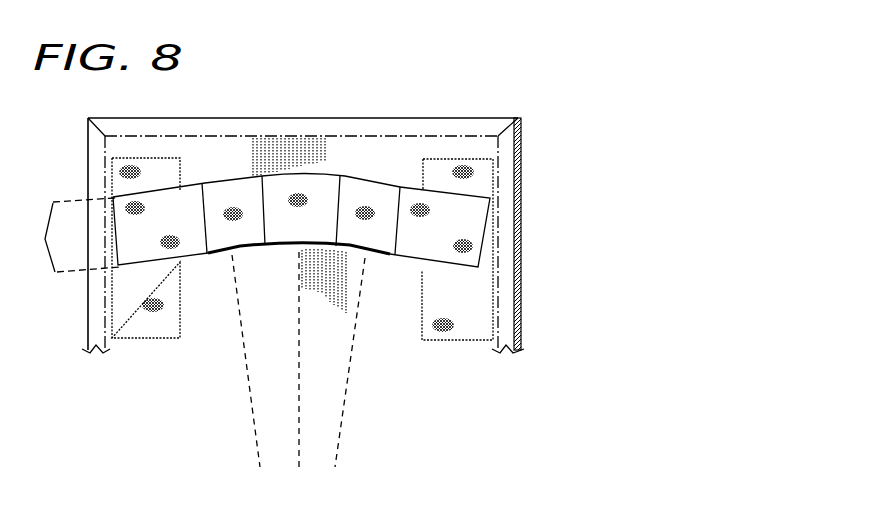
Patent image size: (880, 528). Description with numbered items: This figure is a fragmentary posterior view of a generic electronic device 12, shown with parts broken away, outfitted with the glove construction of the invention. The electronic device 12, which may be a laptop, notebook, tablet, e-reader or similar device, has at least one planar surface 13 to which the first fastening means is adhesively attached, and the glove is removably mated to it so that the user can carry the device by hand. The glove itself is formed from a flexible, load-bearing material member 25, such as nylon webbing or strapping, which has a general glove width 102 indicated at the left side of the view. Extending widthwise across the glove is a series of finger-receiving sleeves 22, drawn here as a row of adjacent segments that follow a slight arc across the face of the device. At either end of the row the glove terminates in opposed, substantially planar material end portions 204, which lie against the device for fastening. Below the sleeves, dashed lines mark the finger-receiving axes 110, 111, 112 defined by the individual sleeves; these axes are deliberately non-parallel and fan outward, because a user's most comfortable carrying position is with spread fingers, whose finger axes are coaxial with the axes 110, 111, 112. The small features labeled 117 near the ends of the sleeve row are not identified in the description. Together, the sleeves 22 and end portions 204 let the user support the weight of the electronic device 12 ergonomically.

The electronic device 12 is at (518, 118).
The planar surface 13 is at (405, 150).
The finger-receiving sleeves 22 is at (229, 185).
The flexible, load-bearing material member 25 is at (203, 203).
The planar material end portions 204 is at (165, 203).
The gap / hinge region 117 is at (149, 262).
The glove width 102 is at (72, 235).
The finger-receiving axis 110 is at (250, 393).
The finger-receiving axis 111 is at (298, 392).
The finger-receiving axis 112 is at (345, 393).